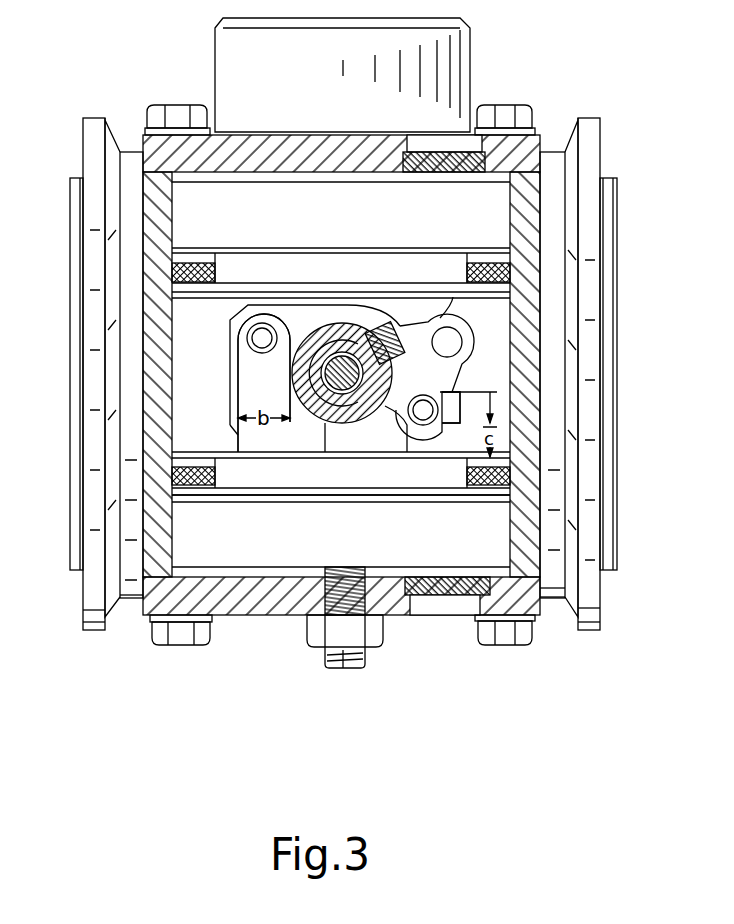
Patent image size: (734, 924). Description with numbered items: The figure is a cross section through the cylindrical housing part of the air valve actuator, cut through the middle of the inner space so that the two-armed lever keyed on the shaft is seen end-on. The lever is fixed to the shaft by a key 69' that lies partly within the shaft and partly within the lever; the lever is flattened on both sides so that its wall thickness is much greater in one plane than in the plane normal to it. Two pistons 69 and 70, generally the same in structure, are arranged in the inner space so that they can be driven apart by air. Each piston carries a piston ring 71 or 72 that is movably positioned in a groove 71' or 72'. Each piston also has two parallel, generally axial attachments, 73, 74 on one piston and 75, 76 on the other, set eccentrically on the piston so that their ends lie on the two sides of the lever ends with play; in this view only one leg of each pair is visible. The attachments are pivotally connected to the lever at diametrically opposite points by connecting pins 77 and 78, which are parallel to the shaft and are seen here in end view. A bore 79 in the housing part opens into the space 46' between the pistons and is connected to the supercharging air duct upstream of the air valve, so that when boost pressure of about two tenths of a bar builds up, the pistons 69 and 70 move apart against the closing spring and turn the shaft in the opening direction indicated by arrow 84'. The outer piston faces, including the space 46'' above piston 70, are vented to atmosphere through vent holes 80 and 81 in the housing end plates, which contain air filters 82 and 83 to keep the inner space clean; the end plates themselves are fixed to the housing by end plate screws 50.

The space between the pistons 46' is at (285, 356).
The space above piston 46'' is at (285, 561).
The end plate screws 50 is at (190, 630).
The piston 69 is at (341, 512).
The key 69' is at (517, 321).
The piston 70 is at (310, 268).
The piston ring 71 is at (270, 474).
The groove 71' is at (337, 502).
The piston ring 72 is at (270, 238).
The groove 72' is at (341, 239).
The attachment 73 is at (447, 392).
The attachment 74 is at (451, 407).
The attachment 75 is at (262, 374).
The attachment 76 is at (264, 383).
The connecting pin 77 is at (440, 397).
The connecting pin 78 is at (247, 338).
The bore 79 is at (459, 342).
The vent hole 80 is at (480, 158).
The vent hole 81 is at (413, 605).
The air filter 82 is at (500, 153).
The air filter 83 is at (487, 610).
The arrow 84' is at (342, 435).